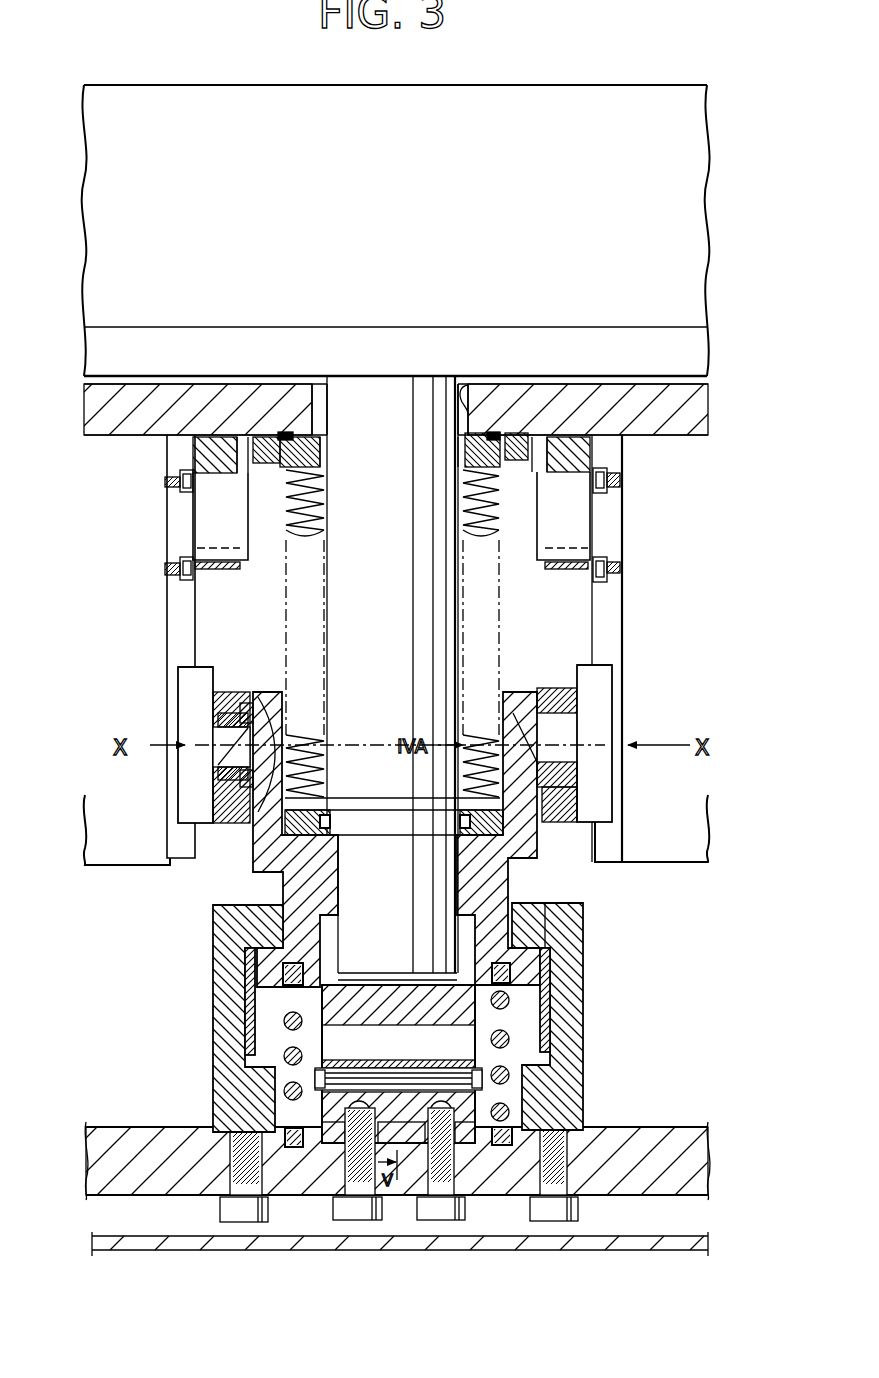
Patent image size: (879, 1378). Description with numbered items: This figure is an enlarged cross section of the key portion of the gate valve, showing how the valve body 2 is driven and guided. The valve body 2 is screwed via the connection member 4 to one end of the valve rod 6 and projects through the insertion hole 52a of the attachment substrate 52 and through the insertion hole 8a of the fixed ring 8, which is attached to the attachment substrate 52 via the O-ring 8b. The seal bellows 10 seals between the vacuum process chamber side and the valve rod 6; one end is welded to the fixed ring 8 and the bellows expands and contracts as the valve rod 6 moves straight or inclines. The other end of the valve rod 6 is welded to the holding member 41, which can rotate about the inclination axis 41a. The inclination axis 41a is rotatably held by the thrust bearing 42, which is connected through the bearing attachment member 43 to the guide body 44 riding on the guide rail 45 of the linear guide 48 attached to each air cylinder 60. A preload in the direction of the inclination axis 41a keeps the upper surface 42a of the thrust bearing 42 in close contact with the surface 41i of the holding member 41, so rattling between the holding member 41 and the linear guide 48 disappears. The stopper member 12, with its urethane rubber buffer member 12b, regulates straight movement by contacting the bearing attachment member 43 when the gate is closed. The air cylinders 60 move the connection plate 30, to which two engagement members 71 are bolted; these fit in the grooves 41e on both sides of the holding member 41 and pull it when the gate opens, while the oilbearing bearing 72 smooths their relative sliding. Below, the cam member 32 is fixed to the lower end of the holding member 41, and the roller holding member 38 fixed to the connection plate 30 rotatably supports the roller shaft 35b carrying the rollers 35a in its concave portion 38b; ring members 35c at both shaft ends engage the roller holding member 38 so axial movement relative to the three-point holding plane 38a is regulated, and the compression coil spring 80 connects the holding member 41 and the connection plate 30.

The valve body 2 is at (640, 88).
The connection member 4 is at (690, 350).
The valve rod 6 is at (445, 662).
The fixed ring 8 is at (300, 432).
The insertion hole 8a is at (323, 450).
The O-ring 8b is at (285, 432).
The seal bellows 10 is at (500, 600).
The stopper member 12 is at (588, 518).
The buffer member 12b is at (213, 571).
The connection plate 30 is at (660, 1148).
The cam member 32 is at (545, 936).
The roller 35a is at (386, 1061).
The roller shaft 35b is at (432, 1081).
The ring members 35c is at (304, 1056).
The roller holding member 38 is at (475, 1106).
The three-point holding plane 38a is at (318, 1143).
The concave portion 38b is at (360, 1112).
The holding member 41 is at (490, 873).
The inclination axis 41a is at (580, 726).
The grooves 41e is at (281, 892).
The surface 41i is at (218, 721).
The thrust bearing 42 is at (580, 696).
The upper surface 42a is at (262, 768).
The bearing attachment member 43 is at (580, 819).
The guide body 44 is at (597, 779).
The guide rail 45 is at (605, 625).
The linear guide 48 is at (212, 656).
The attachment substrate 52 is at (668, 422).
The insertion hole 52a is at (470, 393).
The air cylinder 60 is at (668, 856).
The engagement members 71 is at (218, 993).
The oilbearing bearing 72 is at (245, 1031).
The compression coil spring 80 is at (585, 1021).